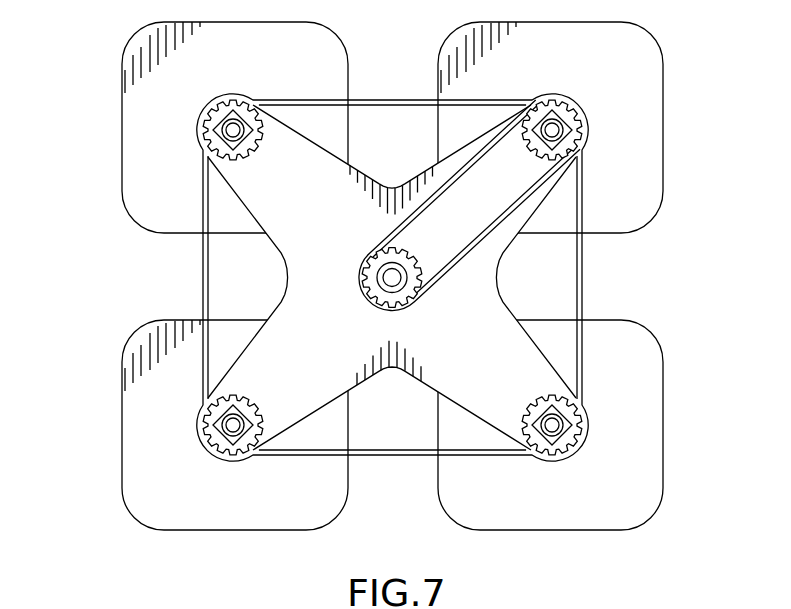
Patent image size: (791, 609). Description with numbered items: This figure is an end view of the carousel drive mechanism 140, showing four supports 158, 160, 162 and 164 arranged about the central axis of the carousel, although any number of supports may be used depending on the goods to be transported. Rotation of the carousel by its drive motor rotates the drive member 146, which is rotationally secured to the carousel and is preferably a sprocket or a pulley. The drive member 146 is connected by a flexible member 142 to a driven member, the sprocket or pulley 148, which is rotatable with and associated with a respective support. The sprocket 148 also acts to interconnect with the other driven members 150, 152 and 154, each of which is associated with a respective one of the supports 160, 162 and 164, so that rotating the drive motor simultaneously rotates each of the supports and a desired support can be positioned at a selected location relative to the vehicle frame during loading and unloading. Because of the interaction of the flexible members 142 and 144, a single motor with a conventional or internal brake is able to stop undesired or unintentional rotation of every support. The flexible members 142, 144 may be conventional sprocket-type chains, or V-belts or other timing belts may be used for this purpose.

The cross-shaped frame 140 is at (612, 267).
The flexible member 142 is at (520, 200).
The flexible member 144 is at (583, 352).
The drive member 146 is at (362, 272).
The driven member 148 is at (587, 117).
The driven member 150 is at (582, 415).
The driven member 152 is at (202, 413).
The driven member 154 is at (200, 133).
The support 158 is at (627, 55).
The support 160 is at (590, 520).
The support 162 is at (147, 506).
The support 164 is at (138, 115).